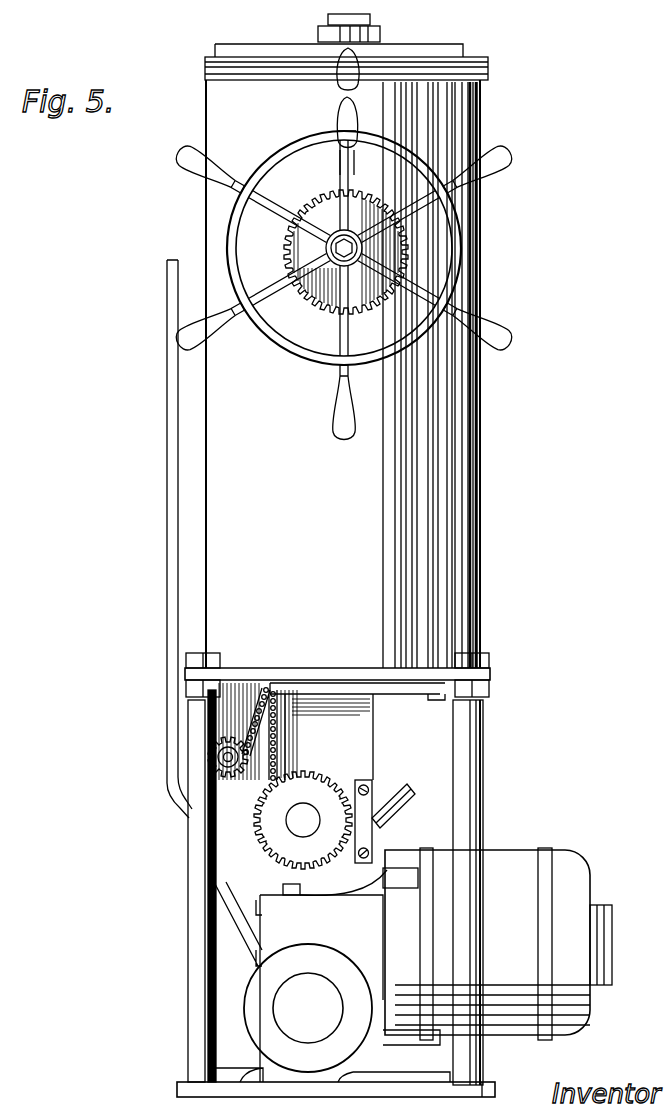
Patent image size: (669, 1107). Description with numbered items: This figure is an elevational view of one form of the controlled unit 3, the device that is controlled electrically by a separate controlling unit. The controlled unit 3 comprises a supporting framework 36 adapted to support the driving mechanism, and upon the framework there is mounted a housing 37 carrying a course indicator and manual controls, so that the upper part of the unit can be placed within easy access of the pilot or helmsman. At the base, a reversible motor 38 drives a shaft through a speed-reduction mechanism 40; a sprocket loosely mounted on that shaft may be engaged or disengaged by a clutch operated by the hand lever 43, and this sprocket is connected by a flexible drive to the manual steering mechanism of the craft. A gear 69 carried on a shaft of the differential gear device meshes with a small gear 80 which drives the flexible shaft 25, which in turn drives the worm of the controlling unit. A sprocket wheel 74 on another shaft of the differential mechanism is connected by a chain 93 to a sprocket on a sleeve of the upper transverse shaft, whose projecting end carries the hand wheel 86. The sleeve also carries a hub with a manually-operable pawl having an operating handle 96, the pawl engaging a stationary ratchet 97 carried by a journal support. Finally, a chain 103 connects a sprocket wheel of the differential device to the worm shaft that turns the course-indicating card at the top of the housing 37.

The controlled unit 3 is at (346, 341).
The flexible shaft 25 is at (396, 794).
The supporting framework 36 is at (484, 760).
The housing 37 is at (480, 492).
The reversible motor 38 is at (518, 852).
The speed-reduction mechanism 40 is at (318, 962).
The hand lever 43 is at (166, 547).
The gear 69 is at (316, 790).
The sprocket wheel 74 is at (240, 753).
The small gear 80 is at (378, 820).
The hand wheel 86 is at (508, 170).
The chain 93 is at (296, 713).
The operating handle 96 is at (341, 113).
The stationary ratchet 97 is at (323, 283).
The chain 103 is at (286, 724).